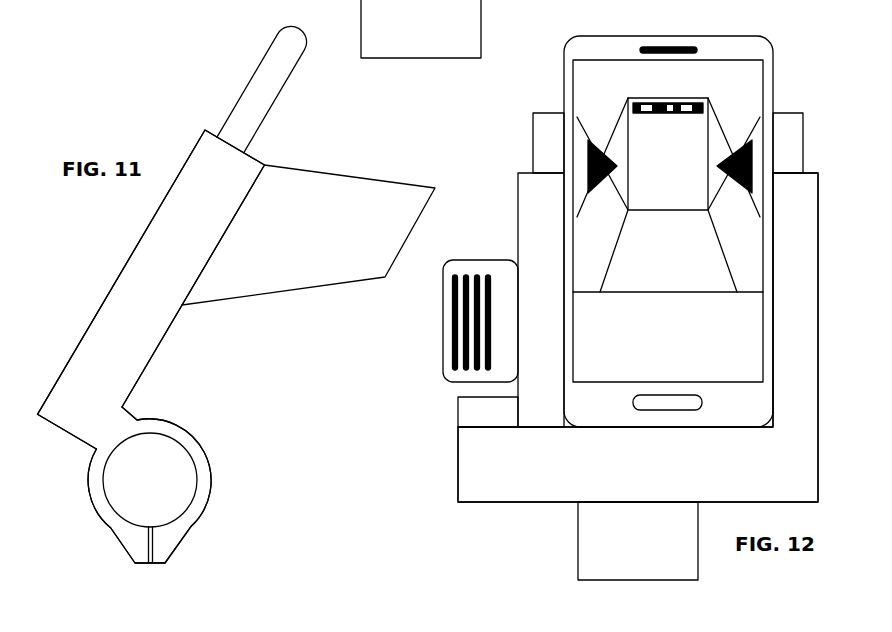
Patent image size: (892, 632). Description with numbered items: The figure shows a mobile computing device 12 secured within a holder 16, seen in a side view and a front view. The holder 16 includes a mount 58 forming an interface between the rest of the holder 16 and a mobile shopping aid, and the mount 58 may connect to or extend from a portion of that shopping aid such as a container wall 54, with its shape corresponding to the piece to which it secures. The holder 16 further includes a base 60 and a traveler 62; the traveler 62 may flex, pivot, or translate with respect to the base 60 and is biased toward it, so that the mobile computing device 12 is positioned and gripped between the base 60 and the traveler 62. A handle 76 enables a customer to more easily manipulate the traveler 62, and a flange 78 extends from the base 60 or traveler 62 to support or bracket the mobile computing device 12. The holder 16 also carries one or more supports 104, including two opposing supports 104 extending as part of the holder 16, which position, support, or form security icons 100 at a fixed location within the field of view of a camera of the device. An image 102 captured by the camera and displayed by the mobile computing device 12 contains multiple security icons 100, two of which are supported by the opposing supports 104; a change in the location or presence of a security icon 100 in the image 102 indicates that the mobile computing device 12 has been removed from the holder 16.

In FIG. 11, the mobile computing device 12 is at (263, 82).
In FIG. 12, the mobile computing device 12 is at (797, 69).
In FIG. 11, the holder 16 is at (106, 237).
In FIG. 12, the holder 16 is at (418, 355).
In FIG. 12, the container wall 54 is at (657, 189).
In FIG. 11, the mount 58 is at (97, 488).
In FIG. 12, the mount 58 is at (628, 549).
In FIG. 11, the base 60 is at (103, 371).
In FIG. 12, the base 60 is at (802, 187).
In FIG. 12, the traveler 62 is at (533, 217).
In FIG. 12, the handle 76 is at (502, 277).
In FIG. 12, the flange 78 is at (465, 418).
In FIG. 12, the security icon 100 is at (652, 98).
In FIG. 12, the image 102 is at (702, 72).
In FIG. 11, the support 104 is at (339, 242).
In FIG. 12, the support 104 is at (540, 133).